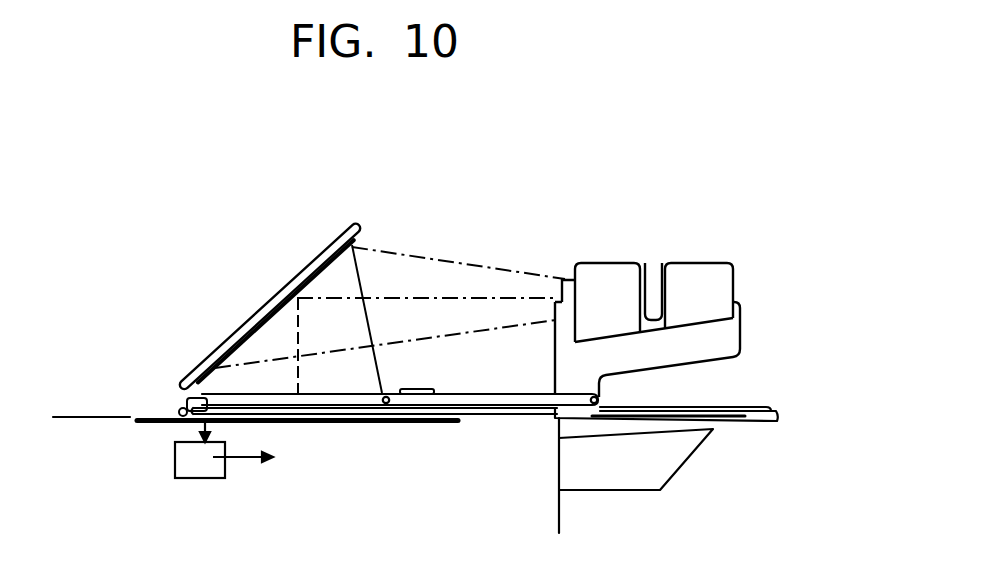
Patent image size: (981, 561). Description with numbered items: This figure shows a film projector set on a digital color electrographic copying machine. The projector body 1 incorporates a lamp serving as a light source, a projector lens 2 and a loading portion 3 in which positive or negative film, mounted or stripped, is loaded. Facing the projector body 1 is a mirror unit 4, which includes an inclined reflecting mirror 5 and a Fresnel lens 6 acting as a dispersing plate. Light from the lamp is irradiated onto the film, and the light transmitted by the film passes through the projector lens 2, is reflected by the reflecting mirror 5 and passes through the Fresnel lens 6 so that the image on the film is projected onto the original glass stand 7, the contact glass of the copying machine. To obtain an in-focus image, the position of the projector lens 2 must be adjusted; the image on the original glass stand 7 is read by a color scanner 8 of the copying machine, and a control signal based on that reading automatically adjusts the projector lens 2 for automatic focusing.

The projector body 1 is at (723, 280).
The projector lens 2 is at (567, 280).
The loading portion 3 is at (653, 295).
The mirror unit 4 is at (203, 367).
The reflecting mirror 5 is at (273, 306).
The Fresnel lens 6 is at (423, 389).
The original glass stand 7 is at (424, 419).
The color scanner 8 is at (197, 480).